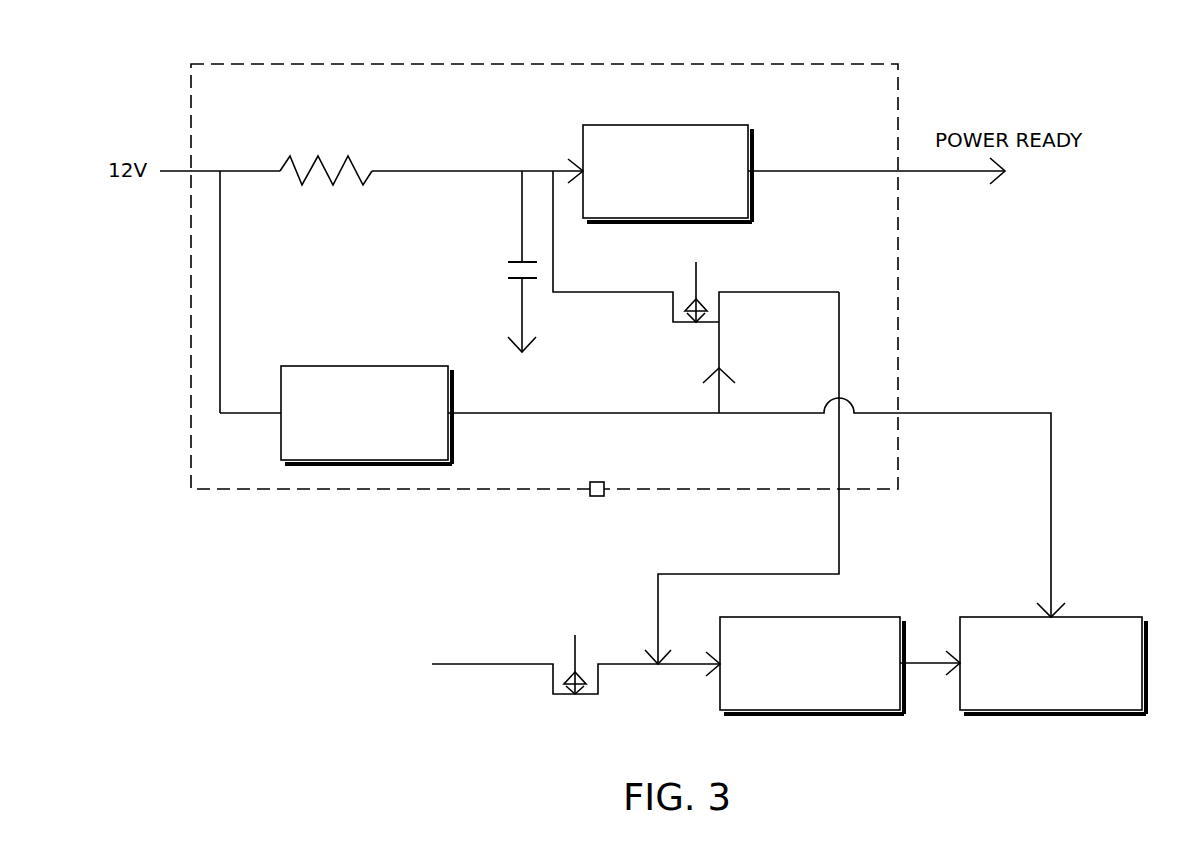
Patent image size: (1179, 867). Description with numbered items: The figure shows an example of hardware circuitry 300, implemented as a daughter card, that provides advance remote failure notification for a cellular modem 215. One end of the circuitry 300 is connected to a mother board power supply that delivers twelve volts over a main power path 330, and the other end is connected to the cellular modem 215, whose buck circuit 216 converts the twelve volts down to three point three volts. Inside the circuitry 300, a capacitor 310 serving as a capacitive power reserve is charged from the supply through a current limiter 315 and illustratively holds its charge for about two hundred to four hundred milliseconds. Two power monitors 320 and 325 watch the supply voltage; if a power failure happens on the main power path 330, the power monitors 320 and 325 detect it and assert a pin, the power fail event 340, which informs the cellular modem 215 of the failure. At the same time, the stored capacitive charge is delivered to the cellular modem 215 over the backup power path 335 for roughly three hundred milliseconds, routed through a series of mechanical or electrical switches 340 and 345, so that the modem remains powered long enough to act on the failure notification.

The hardware circuitry 300 is at (692, 57).
The current limiter 315 is at (313, 157).
The capacitor 310 is at (498, 266).
The power monitor 325 is at (667, 173).
The switch 345 is at (724, 323).
The power monitor 320 is at (366, 415).
The power fail event 340 is at (512, 418).
The backup power path 335 is at (828, 526).
The main power path 330 is at (498, 676).
The buck circuit 216 is at (812, 665).
The cellular modem 215 is at (1053, 665).